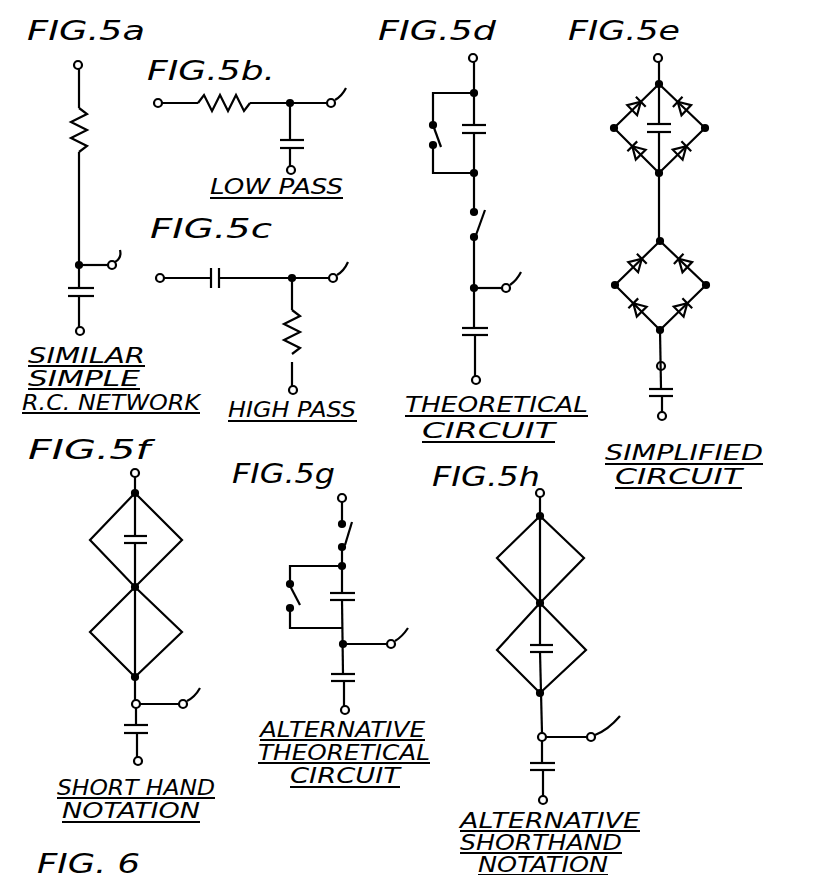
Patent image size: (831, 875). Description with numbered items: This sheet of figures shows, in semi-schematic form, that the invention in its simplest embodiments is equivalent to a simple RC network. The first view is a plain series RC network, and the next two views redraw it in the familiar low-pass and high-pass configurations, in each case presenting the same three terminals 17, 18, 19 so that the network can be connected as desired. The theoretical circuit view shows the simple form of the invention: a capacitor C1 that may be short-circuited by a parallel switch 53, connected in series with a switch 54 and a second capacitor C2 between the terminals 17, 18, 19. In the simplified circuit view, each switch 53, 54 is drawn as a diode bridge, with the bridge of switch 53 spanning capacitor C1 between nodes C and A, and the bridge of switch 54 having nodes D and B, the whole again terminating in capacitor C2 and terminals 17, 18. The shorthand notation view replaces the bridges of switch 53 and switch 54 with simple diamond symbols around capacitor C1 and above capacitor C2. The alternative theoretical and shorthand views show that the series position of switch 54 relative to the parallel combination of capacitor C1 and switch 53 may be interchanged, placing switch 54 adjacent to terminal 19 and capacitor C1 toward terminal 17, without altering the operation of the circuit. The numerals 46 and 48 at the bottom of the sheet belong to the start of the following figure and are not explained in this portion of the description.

In FIG. 5A, the terminal 17 is at (103, 248).
In FIG. 5B, the terminal 17 is at (352, 87).
In FIG. 5C, the terminal 17 is at (346, 260).
In FIG. 5D, the terminal 17 is at (511, 272).
In FIG. 5E, the terminal 17 is at (666, 365).
In FIG. 5F, the terminal 17 is at (185, 690).
In FIG. 5G, the terminal 17 is at (391, 633).
In FIG. 5H, the terminal 17 is at (594, 722).
In FIG. 5A, the terminal 18 is at (76, 328).
In FIG. 5B, the terminal 18 is at (295, 167).
In FIG. 5C, the terminal 18 is at (162, 274).
In FIG. 5D, the terminal 18 is at (472, 378).
In FIG. 5E, the terminal 18 is at (667, 416).
In FIG. 5F, the terminal 18 is at (142, 758).
In FIG. 5G, the terminal 18 is at (350, 708).
In FIG. 5H, the terminal 18 is at (548, 798).
In FIG. 5A, the terminal 19 is at (83, 65).
In FIG. 5B, the terminal 19 is at (154, 106).
In FIG. 5C, the terminal 19 is at (289, 388).
In FIG. 5D, the terminal 19 is at (478, 57).
In FIG. 5E, the terminal 19 is at (663, 57).
In FIG. 5F, the terminal 19 is at (140, 472).
In FIG. 5G, the terminal 19 is at (347, 497).
In FIG. 5H, the terminal 19 is at (545, 493).
In FIG. 5D, the switch 53 is at (428, 136).
In FIG. 5E, the switch 53 is at (702, 117).
In FIG. 5F, the switch 53 is at (160, 562).
In FIG. 5G, the switch 53 is at (285, 598).
In FIG. 5H, the switch 53 is at (572, 668).
In FIG. 5D, the switch 54 is at (470, 222).
In FIG. 5E, the switch 54 is at (703, 273).
In FIG. 5F, the switch 54 is at (165, 655).
In FIG. 5G, the switch 54 is at (356, 533).
In FIG. 5H, the switch 54 is at (560, 592).
In FIG. 5D, the capacitor C1 is at (488, 128).
In FIG. 5E, the capacitor C1 is at (673, 128).
In FIG. 5F, the capacitor C1 is at (150, 540).
In FIG. 5G, the capacitor C1 is at (358, 595).
In FIG. 5H, the capacitor C1 is at (555, 650).
In FIG. 5D, the capacitor C2 is at (463, 330).
In FIG. 5E, the capacitor C2 is at (676, 390).
In FIG. 5F, the capacitor C2 is at (150, 728).
In FIG. 5G, the capacitor C2 is at (358, 678).
In FIG. 5H, the capacitor C2 is at (558, 766).
In FIG. 5E, the bridge node A is at (708, 128).
In FIG. 5E, the bridge node B is at (709, 286).
In FIG. 5E, the bridge node C is at (611, 128).
In FIG. 5E, the bridge node D is at (612, 286).
In FIG. 6, the circuit element of FIG. 6 46 is at (274, 874).
In FIG. 6, the circuit element of FIG. 6 48 is at (650, 874).